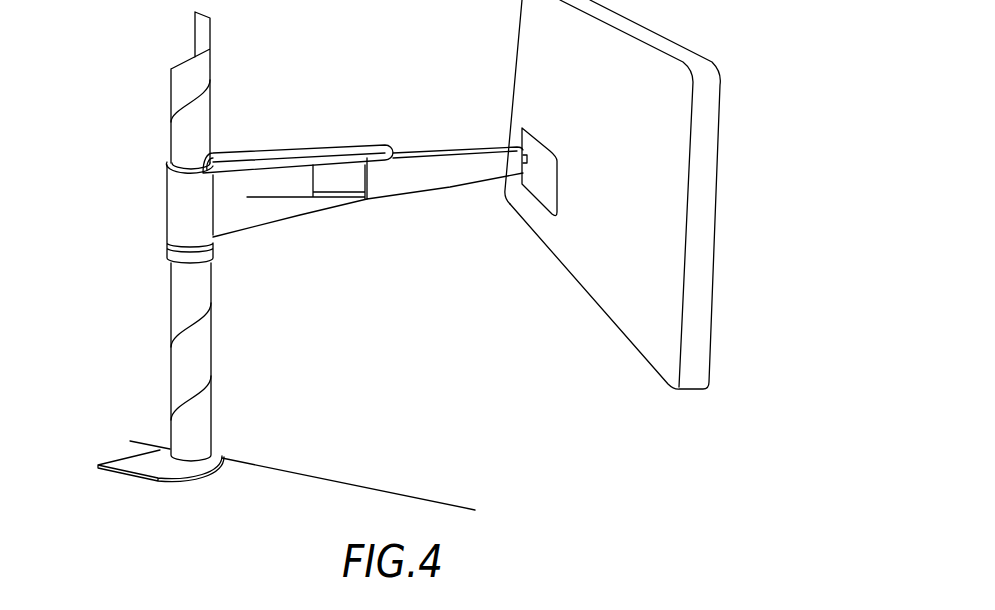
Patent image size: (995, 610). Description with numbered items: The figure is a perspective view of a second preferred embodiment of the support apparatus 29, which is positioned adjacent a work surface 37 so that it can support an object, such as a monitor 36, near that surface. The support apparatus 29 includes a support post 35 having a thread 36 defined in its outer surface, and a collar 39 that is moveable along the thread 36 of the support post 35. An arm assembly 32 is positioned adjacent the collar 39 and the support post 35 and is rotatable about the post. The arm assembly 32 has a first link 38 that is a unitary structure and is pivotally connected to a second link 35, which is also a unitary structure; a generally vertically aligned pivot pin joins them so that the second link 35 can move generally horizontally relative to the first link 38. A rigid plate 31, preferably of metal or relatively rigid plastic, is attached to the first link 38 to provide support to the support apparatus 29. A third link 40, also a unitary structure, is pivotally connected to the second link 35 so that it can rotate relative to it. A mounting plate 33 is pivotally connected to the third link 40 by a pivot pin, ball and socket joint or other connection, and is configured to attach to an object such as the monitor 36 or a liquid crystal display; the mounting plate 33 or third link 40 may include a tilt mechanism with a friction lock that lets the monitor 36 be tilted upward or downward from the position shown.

The support apparatus 29 is at (129, 365).
The rigid plate 31 is at (250, 152).
The arm assembly 32 is at (343, 108).
The mounting plate 33 is at (535, 200).
The support post 35 is at (180, 84).
The thread 36 is at (172, 118).
The work surface 37 is at (312, 475).
The first link 38 is at (287, 213).
The collar 39 is at (210, 248).
The third link 40 is at (535, 157).